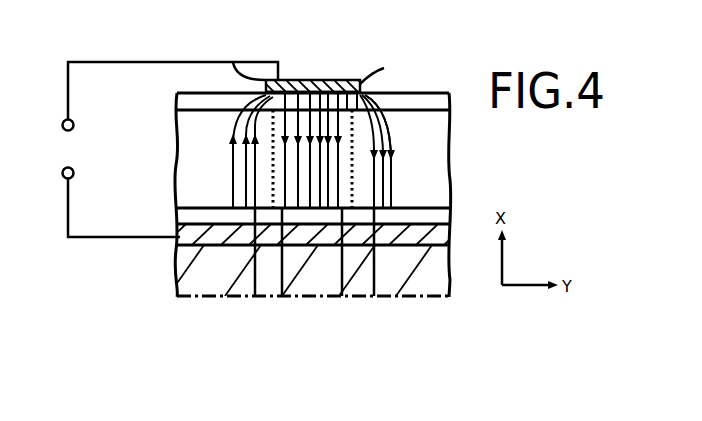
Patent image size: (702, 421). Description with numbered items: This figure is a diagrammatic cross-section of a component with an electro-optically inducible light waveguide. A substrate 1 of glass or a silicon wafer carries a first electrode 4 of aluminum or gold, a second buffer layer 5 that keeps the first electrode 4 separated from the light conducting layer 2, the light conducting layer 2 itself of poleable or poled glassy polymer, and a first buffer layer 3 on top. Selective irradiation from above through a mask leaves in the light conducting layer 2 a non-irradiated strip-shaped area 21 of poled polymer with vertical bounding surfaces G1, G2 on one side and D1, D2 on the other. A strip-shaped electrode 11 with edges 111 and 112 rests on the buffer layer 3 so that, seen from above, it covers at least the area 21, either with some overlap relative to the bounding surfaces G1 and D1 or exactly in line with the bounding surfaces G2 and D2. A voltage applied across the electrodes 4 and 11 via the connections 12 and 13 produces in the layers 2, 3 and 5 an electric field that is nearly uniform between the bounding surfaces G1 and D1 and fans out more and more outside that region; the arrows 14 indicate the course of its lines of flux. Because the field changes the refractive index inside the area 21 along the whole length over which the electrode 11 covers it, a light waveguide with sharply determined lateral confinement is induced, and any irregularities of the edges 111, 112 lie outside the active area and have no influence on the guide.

The substrate 1 is at (193, 288).
The light conducting layer 2 is at (177, 153).
The first buffer layer 3 is at (178, 105).
The first electrode 4 is at (172, 250).
The second buffer layer 5 is at (177, 215).
The strip-shaped electrode 11 is at (343, 80).
The connection 12 is at (108, 198).
The connection 13 is at (157, 98).
The arrows 14 is at (382, 124).
The non-irradiated strip-shaped area 21 is at (313, 80).
The edge of the electrode 111 is at (243, 55).
The edge of the electrode 112 is at (383, 63).
The bounding surface G1 is at (282, 296).
The bounding surface G2 is at (255, 296).
The bounding surface D1 is at (342, 296).
The bounding surface D2 is at (374, 296).